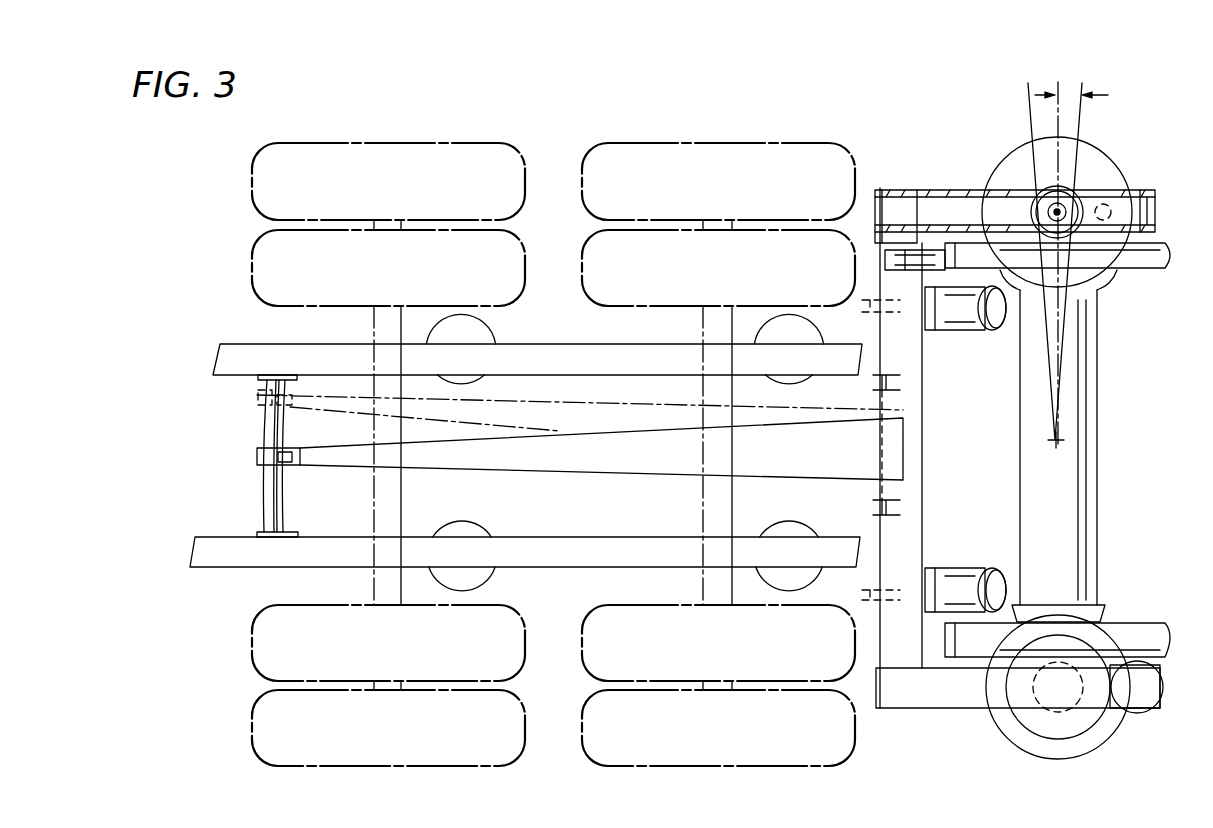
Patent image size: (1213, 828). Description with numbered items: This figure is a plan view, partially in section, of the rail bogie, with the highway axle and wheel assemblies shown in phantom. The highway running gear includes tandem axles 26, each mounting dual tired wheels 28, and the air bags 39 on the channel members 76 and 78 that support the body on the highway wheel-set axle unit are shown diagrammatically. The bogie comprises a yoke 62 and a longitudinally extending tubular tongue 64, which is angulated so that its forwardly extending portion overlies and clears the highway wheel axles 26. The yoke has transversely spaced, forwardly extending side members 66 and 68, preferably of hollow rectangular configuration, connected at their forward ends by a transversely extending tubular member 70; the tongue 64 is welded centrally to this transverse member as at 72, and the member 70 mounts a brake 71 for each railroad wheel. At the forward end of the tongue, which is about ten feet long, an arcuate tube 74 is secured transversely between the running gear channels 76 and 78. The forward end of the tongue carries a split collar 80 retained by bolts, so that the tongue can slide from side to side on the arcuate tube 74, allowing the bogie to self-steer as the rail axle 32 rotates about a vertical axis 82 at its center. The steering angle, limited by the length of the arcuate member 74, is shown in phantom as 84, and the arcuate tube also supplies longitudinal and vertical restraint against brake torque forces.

The tandem axles 26 is at (380, 310).
The dual tired wheels 28 is at (440, 150).
The single axle 32 is at (1086, 355).
The air bags 39 is at (478, 328).
The yoke 62 is at (1139, 407).
The tubular tongue 64 is at (642, 430).
The side member 66 is at (955, 192).
The side member 68 is at (958, 708).
The transversely extending tubular member 70 is at (925, 478).
The brake 71 is at (948, 330).
The weld 72 is at (905, 422).
The arcuate tube 74 is at (277, 498).
The running gear channel 76 is at (285, 356).
The running gear channel 78 is at (248, 560).
The split collar 80 is at (265, 450).
The vertical axis 82 is at (1070, 445).
The steering angle 84 is at (540, 400).